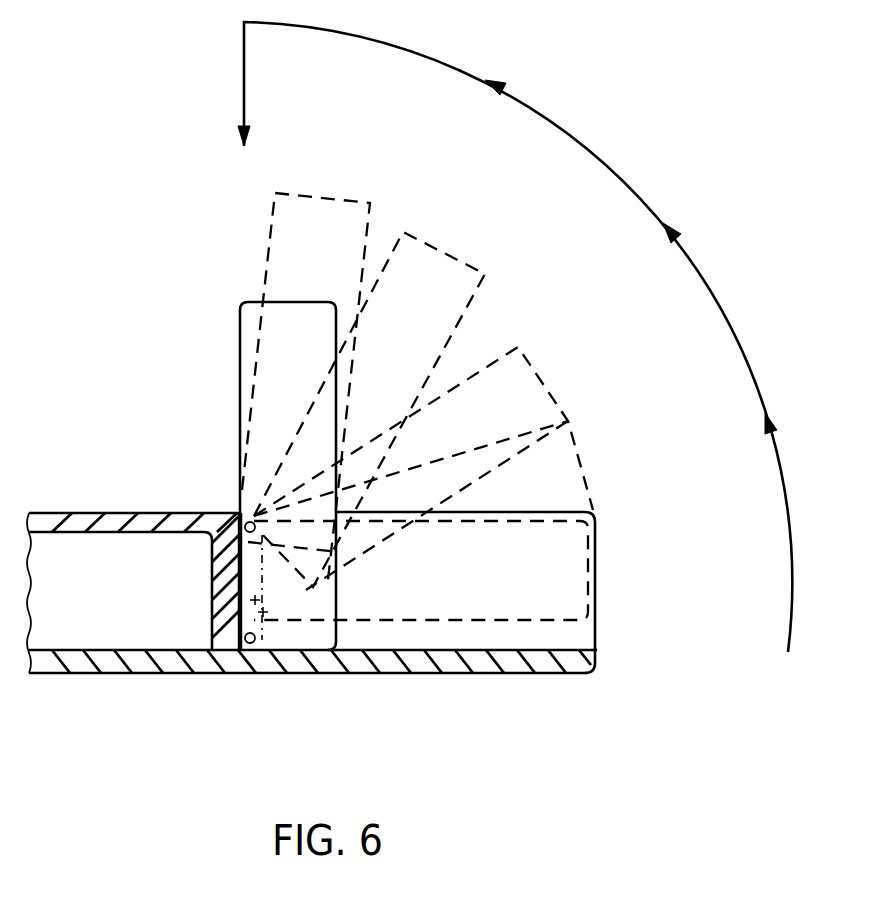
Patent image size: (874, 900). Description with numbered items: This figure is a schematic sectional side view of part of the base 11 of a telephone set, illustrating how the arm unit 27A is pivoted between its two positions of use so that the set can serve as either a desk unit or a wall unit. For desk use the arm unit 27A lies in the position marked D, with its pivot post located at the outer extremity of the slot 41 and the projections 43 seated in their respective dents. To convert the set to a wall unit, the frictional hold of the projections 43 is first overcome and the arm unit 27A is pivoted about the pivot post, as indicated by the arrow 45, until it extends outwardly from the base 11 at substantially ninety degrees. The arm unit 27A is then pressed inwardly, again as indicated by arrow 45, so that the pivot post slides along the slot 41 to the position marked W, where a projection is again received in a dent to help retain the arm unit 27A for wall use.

The base 11 is at (138, 665).
The arm unit 27A is at (423, 433).
The wall unit position W is at (247, 380).
The desk unit position D is at (568, 590).
The slot 41 is at (238, 576).
The projections 43 is at (258, 604).
The arrow 45 is at (613, 170).